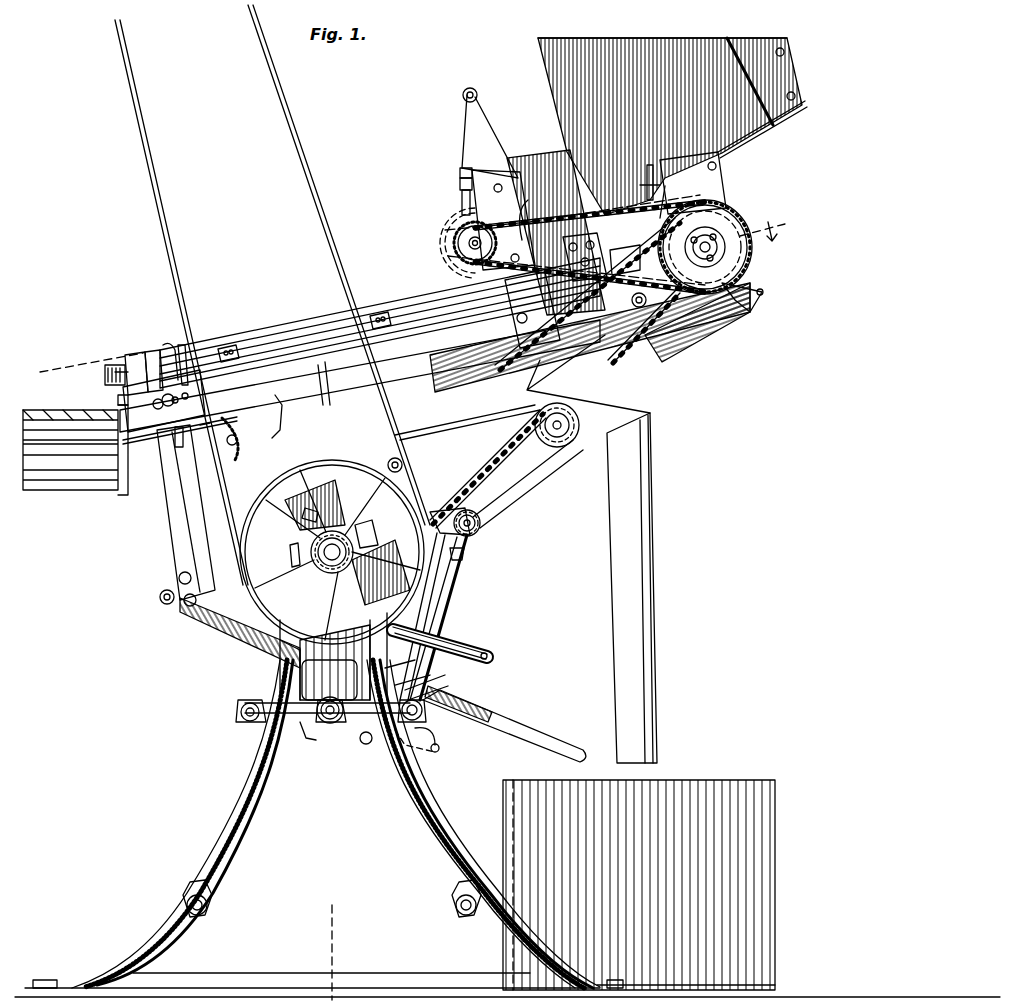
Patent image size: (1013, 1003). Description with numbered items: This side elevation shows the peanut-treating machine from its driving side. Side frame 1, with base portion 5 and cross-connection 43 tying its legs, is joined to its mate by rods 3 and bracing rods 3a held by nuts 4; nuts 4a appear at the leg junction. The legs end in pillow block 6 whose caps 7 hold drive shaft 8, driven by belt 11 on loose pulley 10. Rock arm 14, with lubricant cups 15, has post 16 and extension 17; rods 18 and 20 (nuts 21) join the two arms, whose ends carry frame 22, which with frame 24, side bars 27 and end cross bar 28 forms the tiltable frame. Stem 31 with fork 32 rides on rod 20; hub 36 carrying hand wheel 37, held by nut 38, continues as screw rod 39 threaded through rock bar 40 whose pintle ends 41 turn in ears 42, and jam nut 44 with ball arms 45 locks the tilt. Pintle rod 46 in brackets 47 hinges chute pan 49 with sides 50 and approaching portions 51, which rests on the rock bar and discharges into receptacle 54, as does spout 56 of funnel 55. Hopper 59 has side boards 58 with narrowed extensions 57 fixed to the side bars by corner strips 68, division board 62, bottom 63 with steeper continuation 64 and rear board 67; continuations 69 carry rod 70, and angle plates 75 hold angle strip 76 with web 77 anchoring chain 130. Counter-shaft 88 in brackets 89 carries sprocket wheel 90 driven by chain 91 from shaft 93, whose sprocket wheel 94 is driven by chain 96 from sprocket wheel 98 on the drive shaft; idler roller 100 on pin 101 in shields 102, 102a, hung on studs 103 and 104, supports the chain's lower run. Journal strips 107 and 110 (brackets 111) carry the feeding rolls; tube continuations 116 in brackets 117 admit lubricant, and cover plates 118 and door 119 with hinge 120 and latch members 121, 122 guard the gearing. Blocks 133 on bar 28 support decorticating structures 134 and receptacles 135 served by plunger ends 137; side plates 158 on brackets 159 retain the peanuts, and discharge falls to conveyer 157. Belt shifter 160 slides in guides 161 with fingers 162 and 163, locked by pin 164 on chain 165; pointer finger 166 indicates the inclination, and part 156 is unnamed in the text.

The side frame 1 is at (232, 812).
The rods 3 is at (197, 915).
The bracing rods 3a is at (320, 722).
The nuts 4 is at (330, 225).
The nut 4a is at (248, 722).
The base portion 5 is at (362, 985).
The pillow block 6 is at (225, 630).
The journal caps 7 is at (282, 537).
The drive shaft 8 is at (326, 553).
The loose pulley 10 is at (280, 640).
The belt 11 is at (163, 214).
The rock arm 14 is at (337, 555).
The lubricant cups 15 is at (305, 512).
The post 16 is at (385, 408).
The extension 17 is at (450, 521).
The rod 18 is at (422, 616).
The rod 20 is at (469, 514).
The nuts 21 is at (480, 526).
The frame 22 is at (172, 544).
The frame 24 is at (283, 416).
The side bars 27 is at (360, 376).
The end cross bar 28 is at (118, 400).
The stem 31 is at (455, 605).
The fork 32 is at (458, 575).
The hub 36 is at (466, 642).
The hand wheel 37 is at (492, 660).
The nut 38 is at (468, 554).
The screw rod 39 is at (407, 666).
The rock bar 40 is at (418, 716).
The pintle ends 41 is at (431, 681).
The ears 42 is at (458, 700).
The cross-connections 43 is at (335, 735).
The jam nut 44 is at (437, 742).
The ball arms 45 is at (395, 748).
The pintle rod 46 is at (165, 605).
The brackets 47 is at (178, 578).
The chute pan 49 is at (262, 640).
The upstanding sides 50 is at (331, 680).
The approaching portions 51 is at (566, 742).
The receptacle 54 is at (606, 861).
The funnel 55 is at (588, 374).
The spout continuation 56 is at (657, 600).
The narrowed extensions 57 is at (530, 162).
The side boards 58 is at (670, 126).
The hopper 59 is at (655, 32).
The division board 62 is at (540, 68).
The bottom 63 is at (762, 129).
The bottom continuation 64 is at (591, 252).
The board 67 is at (783, 50).
The corner strips 68 is at (532, 310).
The upstanding continuations 69 is at (468, 130).
The rod 70 is at (477, 95).
The angle plate 75 is at (503, 220).
The angle strip 76 is at (460, 180).
The web 77 is at (470, 168).
The counter-shaft 88 is at (468, 244).
The brackets 89 is at (470, 270).
The sprocket wheel 90 is at (452, 238).
The sprocket chain 91 is at (515, 223).
The shaft 93 is at (712, 247).
The sprocket wheel 94 is at (705, 247).
The sprocket chain 96 is at (520, 425).
The sprocket wheel 98 is at (376, 520).
The idler roller 100 is at (548, 440).
The pin 101 is at (563, 440).
The shield 102 is at (590, 305).
The shield 102a is at (695, 345).
The studs 103 is at (414, 461).
The studs 104 is at (655, 300).
The journal strip 107 is at (621, 257).
The journal strip 110 is at (163, 345).
The brackets 111 is at (180, 356).
The tube continuations 116 is at (680, 188).
The brackets 117 is at (646, 176).
The cover plates 118 is at (693, 183).
The door 119 is at (760, 286).
The hinge connection 120 is at (718, 168).
The latch member 121 is at (763, 295).
The latch member 122 is at (795, 110).
The chain 130 is at (462, 200).
The upstanding blocks 133 is at (118, 365).
The decorticating structure 134 is at (125, 365).
The short receptacle 135 is at (152, 345).
The peanut engaging ends 137 is at (103, 380).
The lug 156 is at (290, 552).
The conveyer 157 is at (40, 410).
The side plates 158 is at (277, 330).
The brackets 159 is at (380, 312).
The belt shifter 160 is at (179, 447).
The guides 161 is at (164, 401).
The fingers 162 is at (245, 428).
The fingers 163 is at (132, 446).
The pin 164 is at (205, 445).
The chain 165 is at (234, 447).
The pointer finger 166 is at (322, 380).